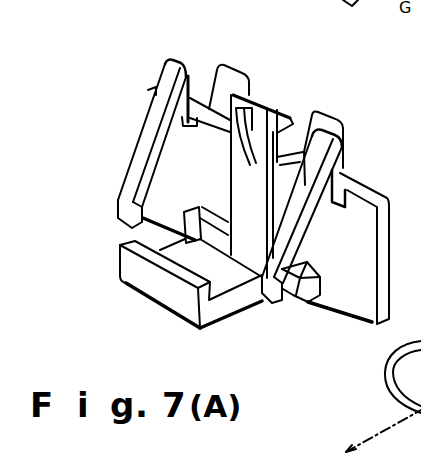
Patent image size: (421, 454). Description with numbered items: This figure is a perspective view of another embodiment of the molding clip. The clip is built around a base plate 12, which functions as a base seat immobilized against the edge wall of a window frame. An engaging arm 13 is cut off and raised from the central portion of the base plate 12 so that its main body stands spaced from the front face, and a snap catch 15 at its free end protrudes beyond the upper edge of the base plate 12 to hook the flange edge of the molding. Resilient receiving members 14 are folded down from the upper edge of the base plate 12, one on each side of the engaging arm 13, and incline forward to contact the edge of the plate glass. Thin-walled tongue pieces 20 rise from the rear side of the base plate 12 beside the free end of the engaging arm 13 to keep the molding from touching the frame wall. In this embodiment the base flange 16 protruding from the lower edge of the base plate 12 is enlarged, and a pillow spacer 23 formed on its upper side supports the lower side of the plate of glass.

The base plate 12 is at (389, 225).
The engaging arm 13 is at (230, 187).
The resilient receiving members 14 is at (140, 160).
The snap catch 15 is at (284, 122).
The base flange 16 is at (233, 315).
The tongue pieces 20 is at (234, 77).
The pillow spacer 23 is at (172, 303).